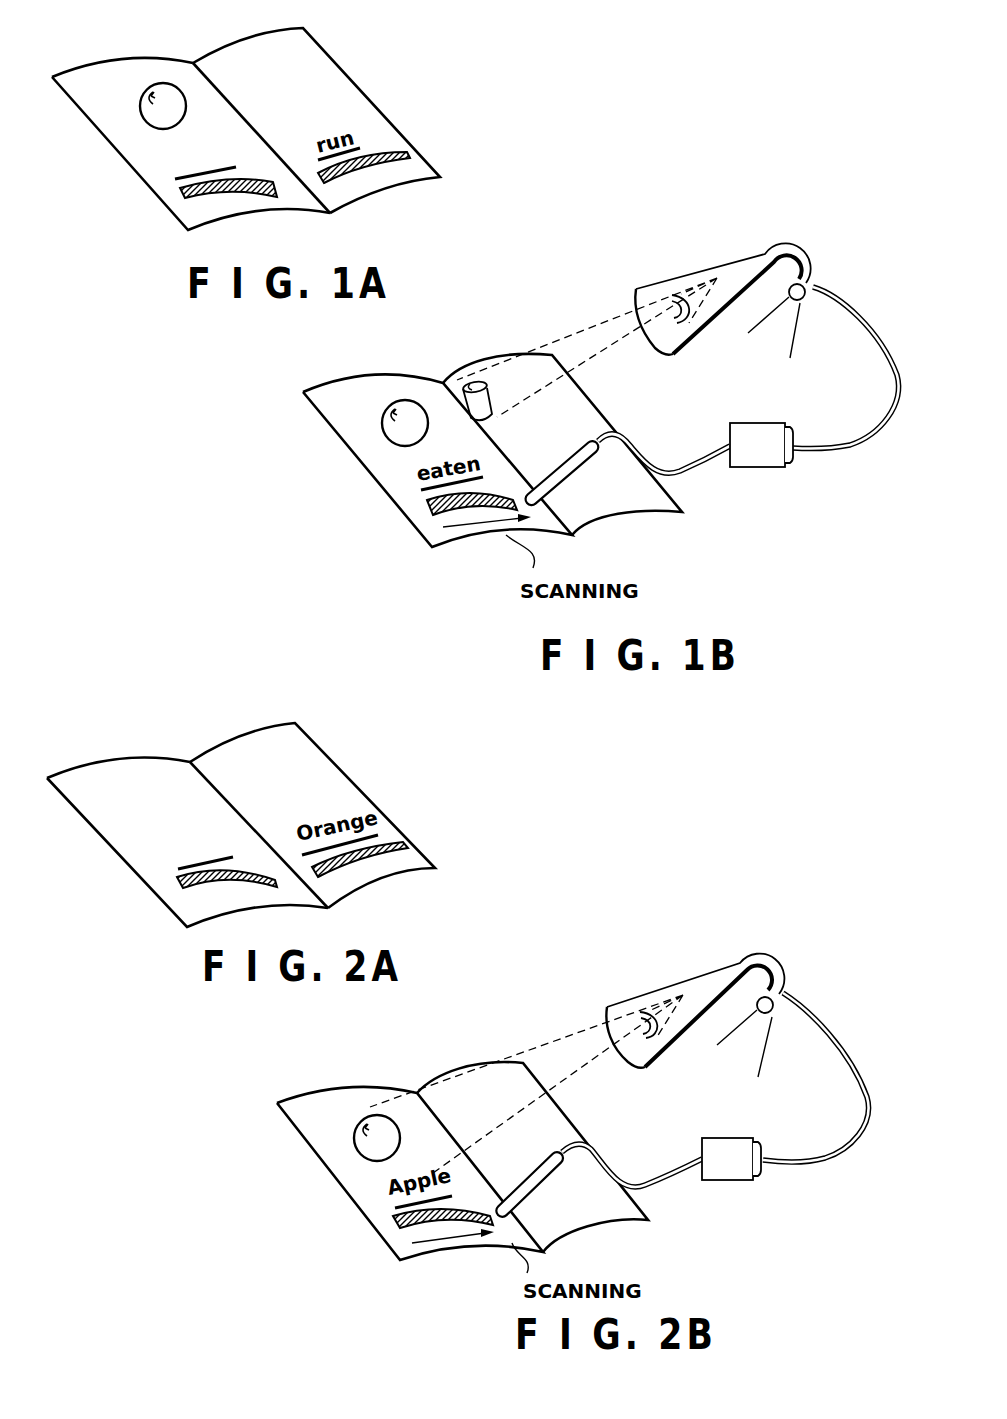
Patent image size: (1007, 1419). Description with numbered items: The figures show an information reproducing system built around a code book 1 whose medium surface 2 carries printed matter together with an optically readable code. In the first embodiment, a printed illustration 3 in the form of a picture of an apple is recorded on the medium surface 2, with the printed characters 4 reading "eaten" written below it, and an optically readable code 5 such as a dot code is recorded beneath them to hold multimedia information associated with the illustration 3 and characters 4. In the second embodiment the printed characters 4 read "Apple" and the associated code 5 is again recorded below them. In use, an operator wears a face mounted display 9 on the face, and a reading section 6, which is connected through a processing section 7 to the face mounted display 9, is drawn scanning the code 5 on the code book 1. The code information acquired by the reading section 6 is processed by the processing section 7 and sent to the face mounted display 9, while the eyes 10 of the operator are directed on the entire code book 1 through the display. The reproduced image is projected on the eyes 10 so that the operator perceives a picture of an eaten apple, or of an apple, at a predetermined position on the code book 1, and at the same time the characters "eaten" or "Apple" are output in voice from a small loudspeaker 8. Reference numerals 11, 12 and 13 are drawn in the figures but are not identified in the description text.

In FIG. 1A, the code book 1 is at (246, 115).
In FIG. 1B, the code book 1 is at (507, 533).
In FIG. 2A, the code book 1 is at (241, 800).
In FIG. 2B, the code book 1 is at (493, 1248).
In FIG. 1A, the medium surface 2 is at (161, 66).
In FIG. 2A, the medium surface 2 is at (151, 767).
In FIG. 1A, the printed illustration 3 is at (140, 107).
In FIG. 1B, the printed illustration 3 is at (384, 438).
In FIG. 1A, the printed characters 4 is at (158, 169).
In FIG. 2A, the printed characters 4 is at (168, 862).
In FIG. 1A, the optically readable code 5 is at (180, 190).
In FIG. 1B, the optically readable code 5 is at (420, 522).
In FIG. 2A, the optically readable code 5 is at (181, 893).
In FIG. 2B, the optically readable code 5 is at (395, 1220).
In FIG. 1B, the reading section 6 is at (573, 465).
In FIG. 2B, the reading section 6 is at (553, 1179).
In FIG. 1B, the processing section 7 is at (756, 468).
In FIG. 2B, the processing section 7 is at (735, 1182).
In FIG. 1B, the small loudspeaker 8 is at (767, 255).
In FIG. 2B, the small loudspeaker 8 is at (750, 968).
In FIG. 1B, the face mounted display 9 is at (782, 242).
In FIG. 2B, the face mounted display 9 is at (670, 977).
In FIG. 1B, the eyes 10 is at (675, 283).
In FIG. 2B, the eyes 10 is at (526, 1084).
In FIG. 1B, the pronunciation output 11 is at (791, 357).
In FIG. 2B, the pronunciation output 11 is at (753, 1073).
In FIG. 1B, the cup 12 is at (462, 381).
In FIG. 2B, the picture of apple 13 is at (352, 1122).